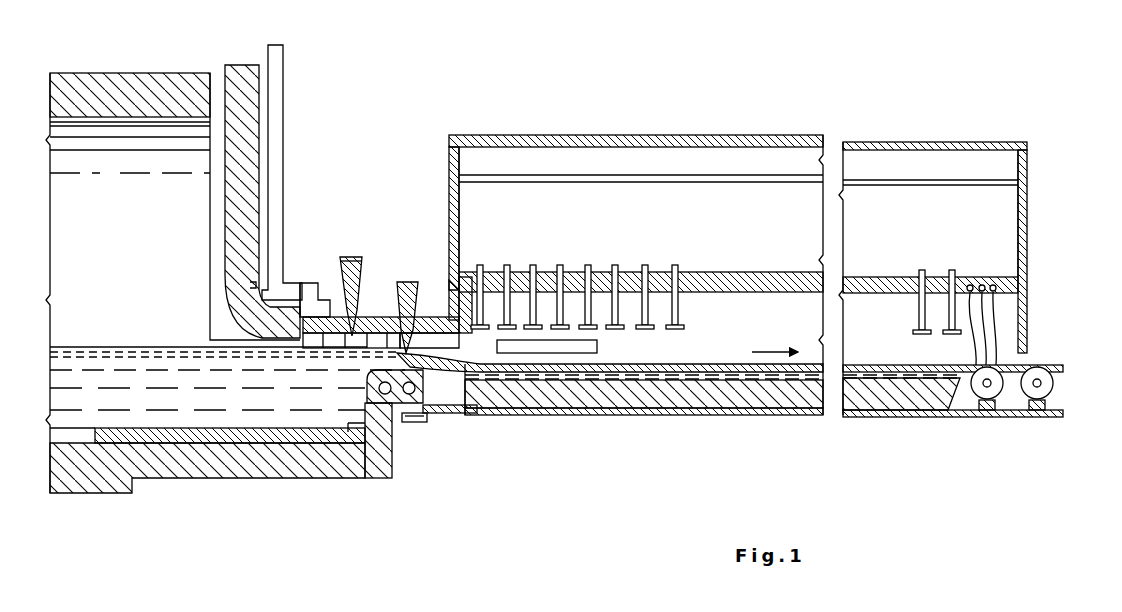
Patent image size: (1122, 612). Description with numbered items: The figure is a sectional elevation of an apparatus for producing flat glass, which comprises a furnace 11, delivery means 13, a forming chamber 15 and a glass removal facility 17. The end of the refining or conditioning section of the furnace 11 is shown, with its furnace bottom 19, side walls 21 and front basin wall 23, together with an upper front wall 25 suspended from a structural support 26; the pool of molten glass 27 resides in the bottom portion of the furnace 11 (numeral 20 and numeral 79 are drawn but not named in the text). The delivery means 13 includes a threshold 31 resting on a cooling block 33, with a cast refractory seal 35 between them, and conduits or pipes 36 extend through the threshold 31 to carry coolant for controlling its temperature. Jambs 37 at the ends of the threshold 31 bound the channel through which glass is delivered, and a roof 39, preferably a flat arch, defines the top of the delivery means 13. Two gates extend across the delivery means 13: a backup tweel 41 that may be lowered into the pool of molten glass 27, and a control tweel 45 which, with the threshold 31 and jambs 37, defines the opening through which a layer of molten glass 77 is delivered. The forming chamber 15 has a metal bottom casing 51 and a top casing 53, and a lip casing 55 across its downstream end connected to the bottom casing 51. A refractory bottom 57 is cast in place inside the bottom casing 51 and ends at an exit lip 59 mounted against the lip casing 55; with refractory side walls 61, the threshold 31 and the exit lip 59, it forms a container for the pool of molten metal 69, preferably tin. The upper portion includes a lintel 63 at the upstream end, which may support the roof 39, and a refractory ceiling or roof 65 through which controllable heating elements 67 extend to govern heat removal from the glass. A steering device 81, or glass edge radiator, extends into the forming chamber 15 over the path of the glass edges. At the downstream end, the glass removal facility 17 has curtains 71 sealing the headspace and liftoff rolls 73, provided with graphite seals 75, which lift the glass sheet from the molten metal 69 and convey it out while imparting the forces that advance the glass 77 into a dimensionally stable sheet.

The furnace 11 is at (190, 38).
The delivery means 13 is at (377, 225).
The forming chamber 15 is at (668, 120).
The glass removal facility 17 is at (1054, 320).
The furnace bottom 19 is at (185, 468).
The support plate 20 is at (298, 478).
The side walls 21 is at (128, 312).
The front basin wall 23 is at (393, 438).
The upper front wall 25 is at (260, 108).
The structural support 26 is at (280, 186).
The pool of molten glass 27 is at (153, 412).
The threshold 31 is at (366, 398).
The cooling block 33 is at (425, 421).
The cast refractory seal 35 is at (450, 414).
The conduits or pipes 36 is at (378, 386).
The jambs 37 is at (428, 340).
The roof 39 is at (318, 312).
The backup tweel 41 is at (362, 259).
The control tweel 45 is at (398, 296).
The bottom casing 51 is at (722, 413).
The top casing 53 is at (449, 220).
The lip casing 55 is at (974, 395).
The refractory bottom 57 is at (650, 400).
The exit lip 59 is at (940, 405).
The refractory side walls 61 is at (732, 362).
The lintel 63 is at (465, 335).
The ceiling or roof 65 is at (752, 292).
The heating elements 67 is at (678, 305).
The pool of molten metal 69 is at (790, 380).
The curtains 71 is at (968, 345).
The liftoff rolls 73 is at (1054, 383).
The seals 75 is at (1063, 411).
The layer of molten glass 77 is at (455, 362).
The exit roof 79 is at (1063, 368).
The steering device 81 is at (597, 347).